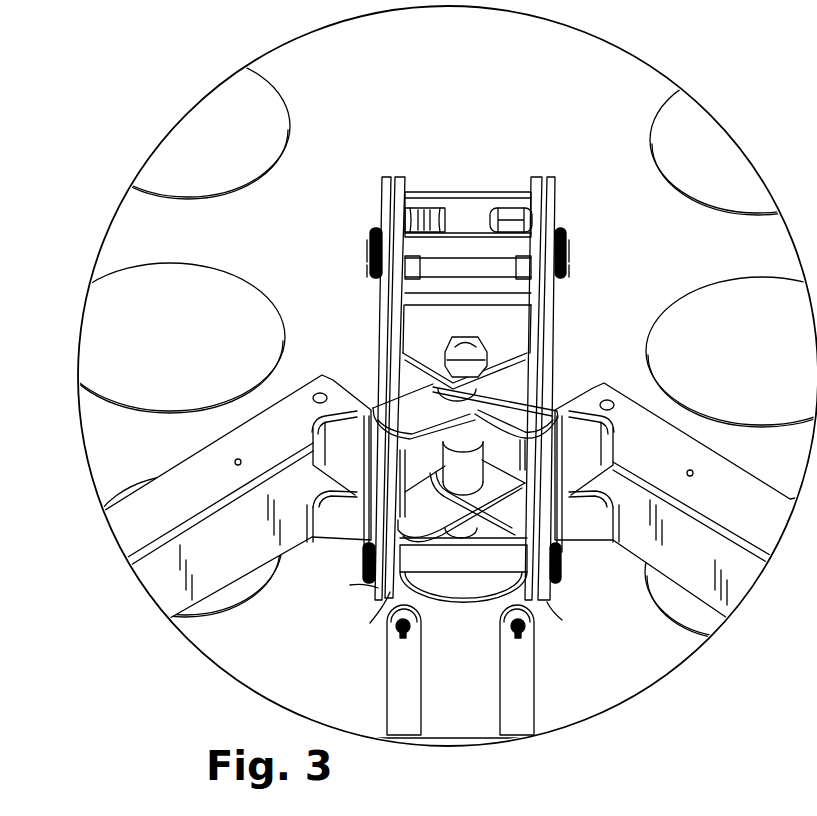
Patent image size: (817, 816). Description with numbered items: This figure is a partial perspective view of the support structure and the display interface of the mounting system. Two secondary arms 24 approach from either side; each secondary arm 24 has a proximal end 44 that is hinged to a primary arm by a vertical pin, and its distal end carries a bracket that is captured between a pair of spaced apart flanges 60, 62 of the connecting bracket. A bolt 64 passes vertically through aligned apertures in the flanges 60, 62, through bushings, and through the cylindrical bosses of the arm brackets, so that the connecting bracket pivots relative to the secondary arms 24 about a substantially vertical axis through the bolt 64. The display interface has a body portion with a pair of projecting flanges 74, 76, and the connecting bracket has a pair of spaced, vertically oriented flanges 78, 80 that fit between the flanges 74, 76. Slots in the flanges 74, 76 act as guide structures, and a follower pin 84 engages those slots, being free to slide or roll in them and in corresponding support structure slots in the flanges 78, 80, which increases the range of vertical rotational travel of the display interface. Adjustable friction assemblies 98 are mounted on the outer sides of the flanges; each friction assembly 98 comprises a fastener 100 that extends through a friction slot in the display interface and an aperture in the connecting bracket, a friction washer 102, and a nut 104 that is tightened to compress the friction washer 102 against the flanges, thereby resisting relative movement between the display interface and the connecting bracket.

The secondary arm 24 is at (212, 462).
The proximal end 44 is at (443, 563).
The flange 60 is at (425, 318).
The flange 62 is at (477, 520).
The bolt 64 is at (468, 347).
The projecting flange 74 is at (387, 206).
The projecting flange 76 is at (556, 204).
The vertically oriented flange 78 is at (399, 180).
The vertically oriented flange 80 is at (537, 178).
The follower pin 84 is at (460, 242).
The adjustable friction assembly 98 is at (368, 246).
The fastener 100 is at (368, 263).
The friction washer 102 is at (372, 276).
The nut 104 is at (413, 275).